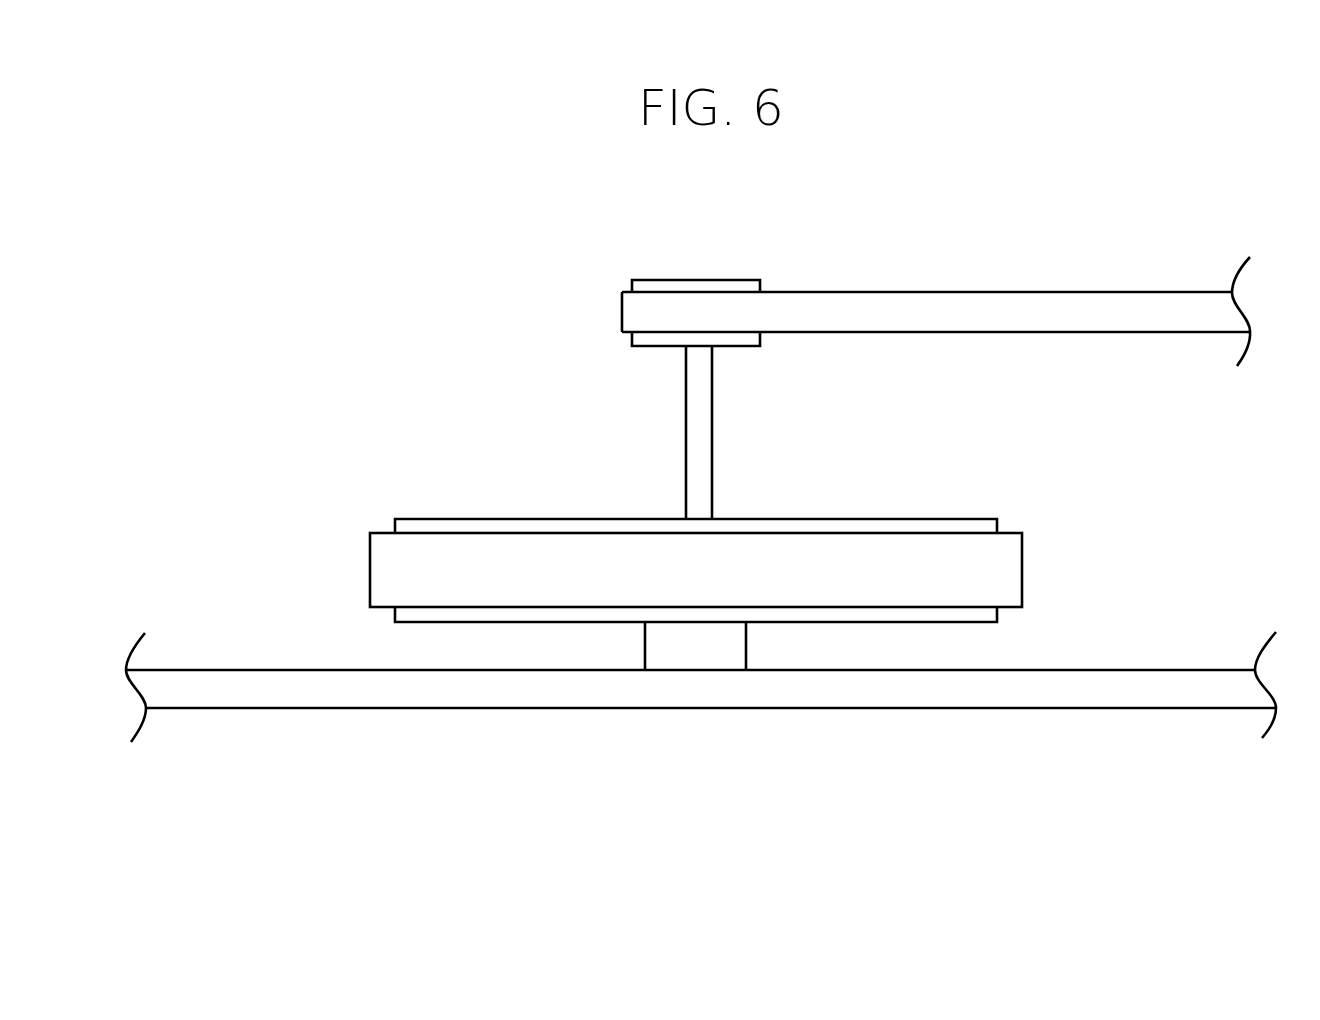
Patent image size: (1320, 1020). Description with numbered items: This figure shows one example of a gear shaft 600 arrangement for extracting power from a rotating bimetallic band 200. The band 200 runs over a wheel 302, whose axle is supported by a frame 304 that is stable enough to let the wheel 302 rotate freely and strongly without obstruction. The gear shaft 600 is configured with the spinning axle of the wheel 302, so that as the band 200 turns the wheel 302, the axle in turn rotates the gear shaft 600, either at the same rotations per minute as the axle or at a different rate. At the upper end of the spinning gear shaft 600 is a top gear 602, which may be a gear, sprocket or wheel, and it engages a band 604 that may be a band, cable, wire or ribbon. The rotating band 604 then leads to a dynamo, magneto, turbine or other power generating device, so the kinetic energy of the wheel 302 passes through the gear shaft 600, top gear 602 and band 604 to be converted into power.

The bimetallic band 200 is at (420, 570).
The wheel 302 is at (938, 518).
The frame 304 is at (490, 691).
The gear shaft 600 is at (697, 431).
The top gear 602 is at (670, 280).
The band 604 is at (950, 311).